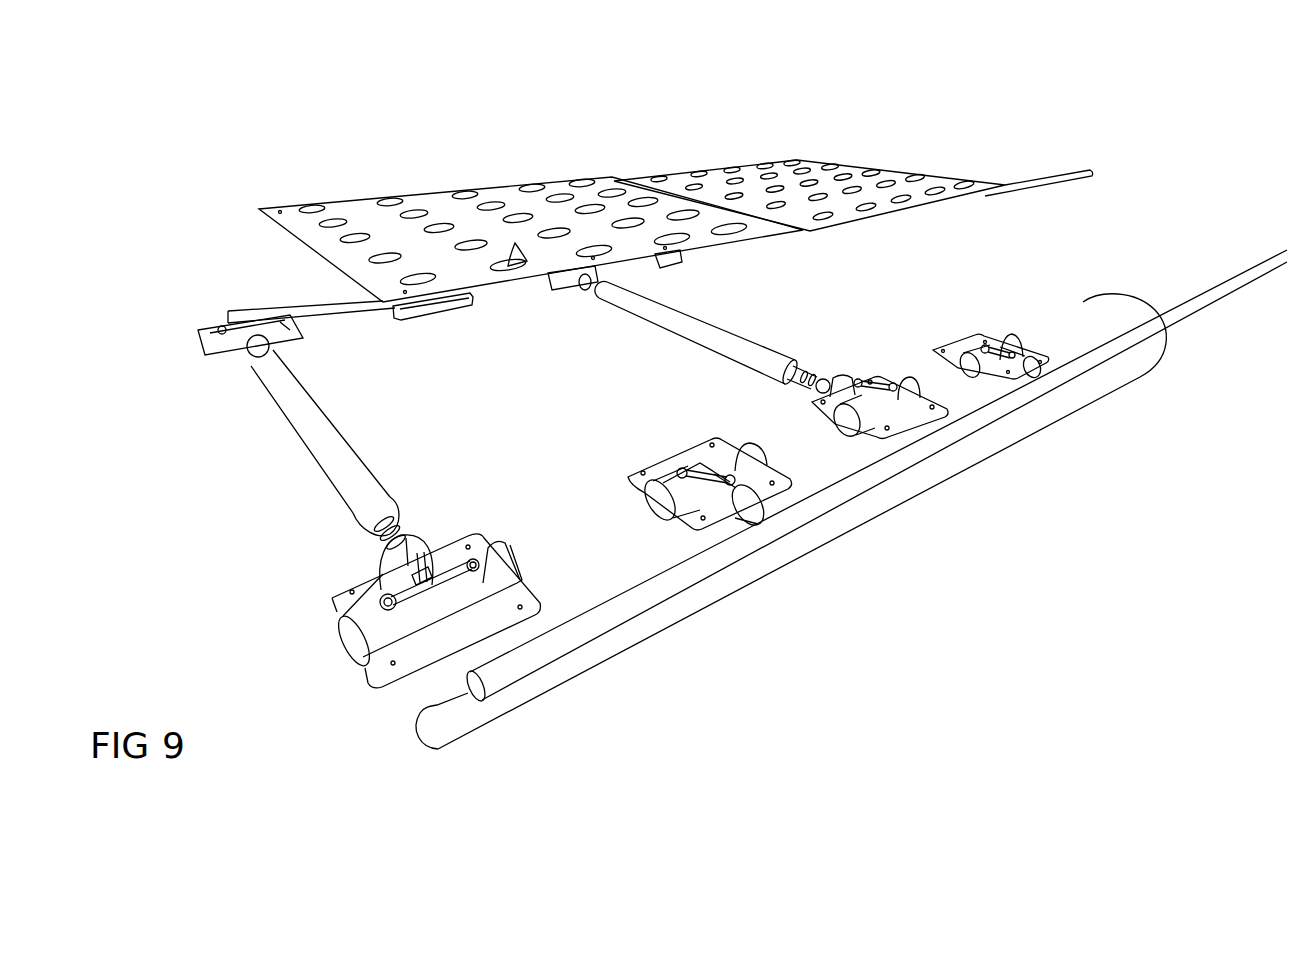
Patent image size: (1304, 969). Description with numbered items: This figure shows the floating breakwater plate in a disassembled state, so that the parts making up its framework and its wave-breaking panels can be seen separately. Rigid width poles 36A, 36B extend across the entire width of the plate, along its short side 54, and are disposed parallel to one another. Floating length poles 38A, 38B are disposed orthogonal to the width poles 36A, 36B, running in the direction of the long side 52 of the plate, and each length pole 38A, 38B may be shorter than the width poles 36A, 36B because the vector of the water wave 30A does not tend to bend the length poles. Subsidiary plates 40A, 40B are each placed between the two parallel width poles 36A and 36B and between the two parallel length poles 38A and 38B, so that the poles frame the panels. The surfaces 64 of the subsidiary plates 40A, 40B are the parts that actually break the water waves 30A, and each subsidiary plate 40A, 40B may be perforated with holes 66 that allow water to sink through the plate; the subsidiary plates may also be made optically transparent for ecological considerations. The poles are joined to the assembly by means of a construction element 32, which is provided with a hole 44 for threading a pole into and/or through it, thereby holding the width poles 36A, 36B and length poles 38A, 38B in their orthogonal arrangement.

The water wave 30A is at (172, 510).
The construction element 32 is at (735, 527).
The rigid pole 36A is at (1230, 278).
The rigid pole 36B is at (1047, 176).
The length pole 38A is at (302, 422).
The length pole 38B is at (677, 322).
The subsidiary plate 40A is at (827, 173).
The subsidiary plate 40B is at (480, 225).
The hole of the construction element 44 is at (340, 648).
The long side of the plate 52 is at (974, 122).
The short side of the plate 54 is at (921, 523).
The surface of subsidiary plate 64 is at (600, 233).
The hole 66 is at (515, 268).